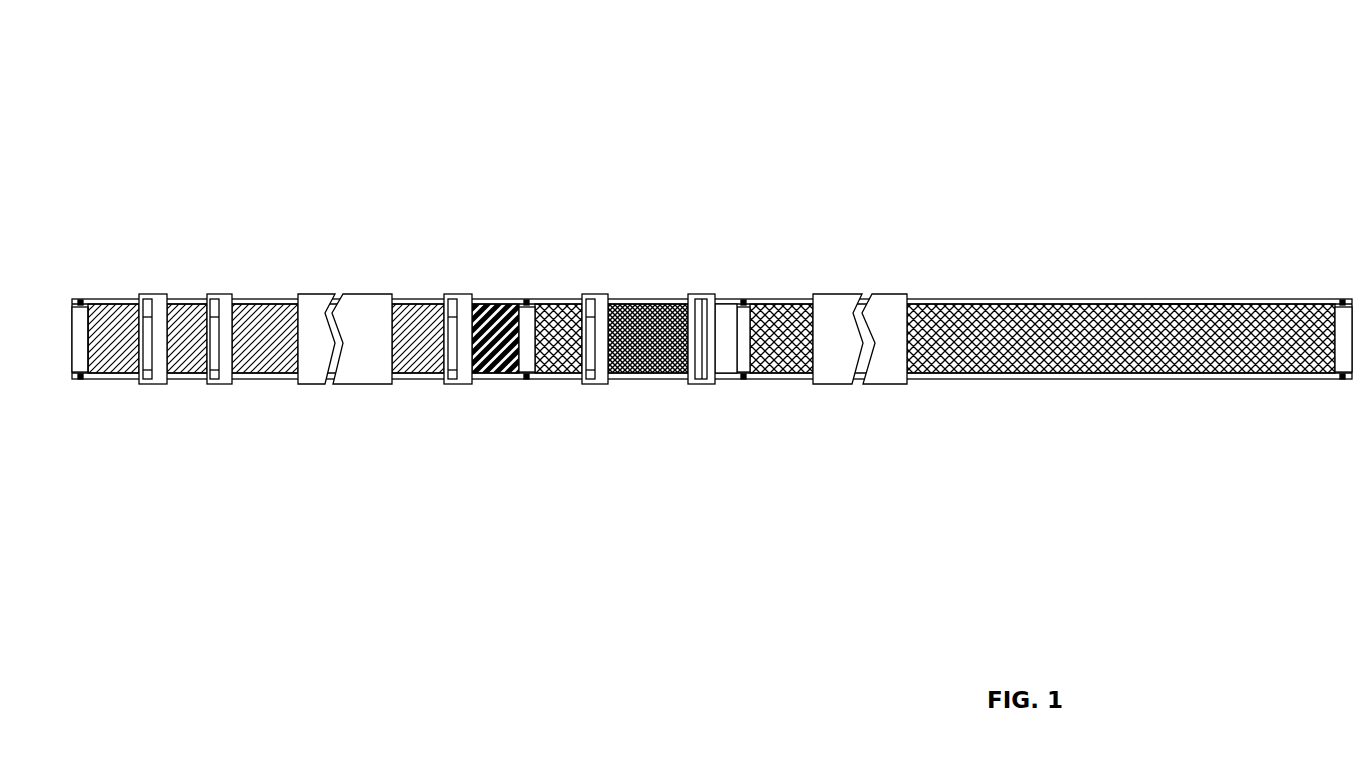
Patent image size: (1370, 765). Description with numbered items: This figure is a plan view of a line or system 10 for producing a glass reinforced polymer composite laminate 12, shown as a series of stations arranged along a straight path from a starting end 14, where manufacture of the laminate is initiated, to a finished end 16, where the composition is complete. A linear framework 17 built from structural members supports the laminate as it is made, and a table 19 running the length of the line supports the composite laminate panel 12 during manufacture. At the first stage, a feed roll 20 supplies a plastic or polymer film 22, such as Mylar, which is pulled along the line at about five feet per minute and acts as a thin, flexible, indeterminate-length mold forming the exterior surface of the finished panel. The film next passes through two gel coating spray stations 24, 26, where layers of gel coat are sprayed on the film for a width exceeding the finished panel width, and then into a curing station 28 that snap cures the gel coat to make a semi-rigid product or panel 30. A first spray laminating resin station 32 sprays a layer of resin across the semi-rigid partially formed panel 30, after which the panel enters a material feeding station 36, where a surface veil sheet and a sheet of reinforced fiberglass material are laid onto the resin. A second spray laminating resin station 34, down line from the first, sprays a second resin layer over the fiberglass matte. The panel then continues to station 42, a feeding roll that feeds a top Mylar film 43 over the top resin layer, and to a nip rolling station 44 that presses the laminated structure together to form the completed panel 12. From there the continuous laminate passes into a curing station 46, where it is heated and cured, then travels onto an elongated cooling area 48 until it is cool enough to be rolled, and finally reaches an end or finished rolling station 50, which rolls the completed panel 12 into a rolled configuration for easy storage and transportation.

The system 10 is at (989, 122).
The glass reinforced polymer composite laminate 12 is at (1021, 308).
The starting end 14 is at (91, 353).
The finished end 16 is at (1319, 338).
The linear framework 17 is at (952, 384).
The table 19 is at (114, 380).
The feed roll 20 is at (77, 382).
The polymer film 22 is at (118, 313).
The gel coating spray station 24 is at (158, 393).
The gel coating spray station 26 is at (216, 398).
The curing station 28 is at (320, 290).
The semi-rigid product/panel 30 is at (417, 306).
The spray laminating resin station 32 is at (465, 290).
The spray laminating resin station 34 is at (599, 290).
The material feeding station 36 is at (520, 392).
The feeding role 42 is at (744, 378).
The top Mylar film 43 is at (727, 313).
The nip rolling station 44 is at (701, 290).
The curing station 46 is at (880, 290).
The elongated cooling area 48 is at (1178, 310).
The end/finished rolling station 50 is at (1335, 384).